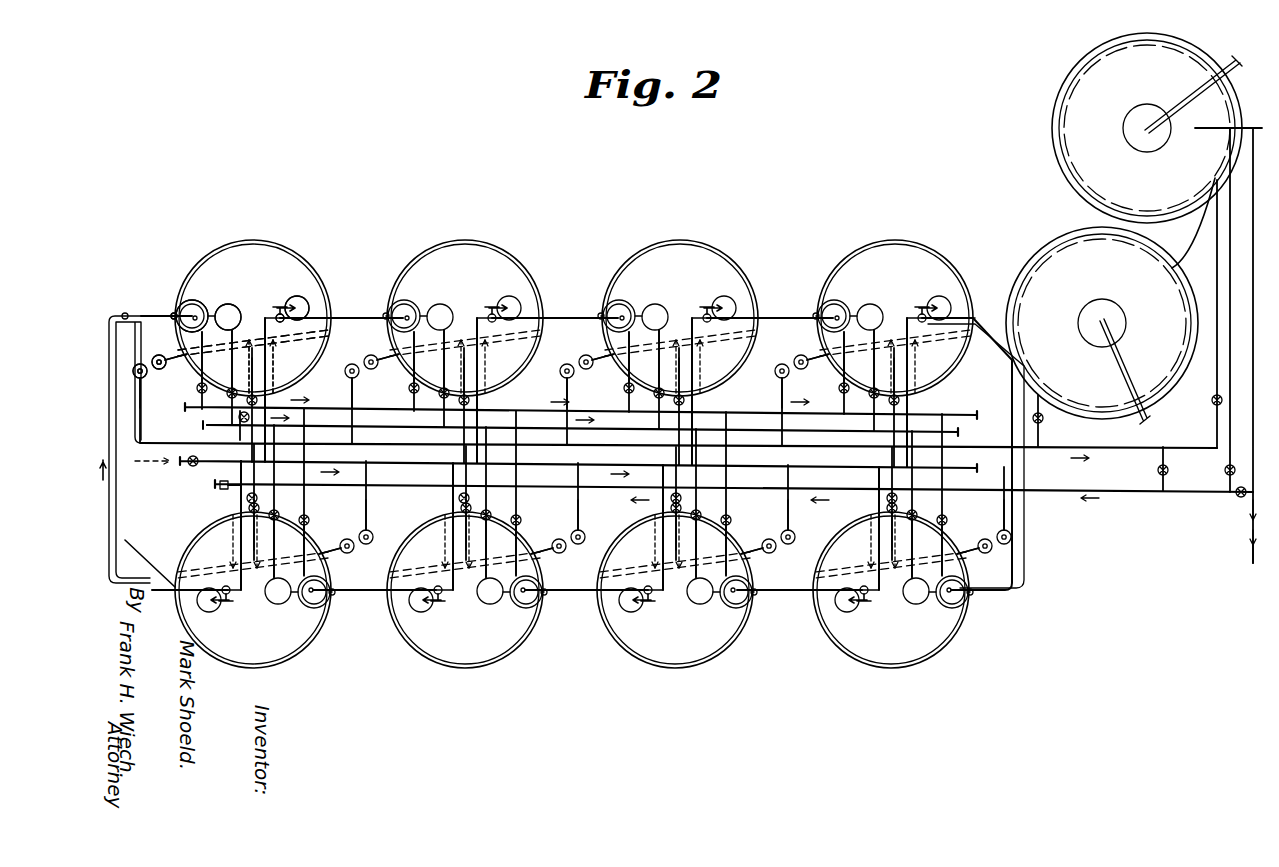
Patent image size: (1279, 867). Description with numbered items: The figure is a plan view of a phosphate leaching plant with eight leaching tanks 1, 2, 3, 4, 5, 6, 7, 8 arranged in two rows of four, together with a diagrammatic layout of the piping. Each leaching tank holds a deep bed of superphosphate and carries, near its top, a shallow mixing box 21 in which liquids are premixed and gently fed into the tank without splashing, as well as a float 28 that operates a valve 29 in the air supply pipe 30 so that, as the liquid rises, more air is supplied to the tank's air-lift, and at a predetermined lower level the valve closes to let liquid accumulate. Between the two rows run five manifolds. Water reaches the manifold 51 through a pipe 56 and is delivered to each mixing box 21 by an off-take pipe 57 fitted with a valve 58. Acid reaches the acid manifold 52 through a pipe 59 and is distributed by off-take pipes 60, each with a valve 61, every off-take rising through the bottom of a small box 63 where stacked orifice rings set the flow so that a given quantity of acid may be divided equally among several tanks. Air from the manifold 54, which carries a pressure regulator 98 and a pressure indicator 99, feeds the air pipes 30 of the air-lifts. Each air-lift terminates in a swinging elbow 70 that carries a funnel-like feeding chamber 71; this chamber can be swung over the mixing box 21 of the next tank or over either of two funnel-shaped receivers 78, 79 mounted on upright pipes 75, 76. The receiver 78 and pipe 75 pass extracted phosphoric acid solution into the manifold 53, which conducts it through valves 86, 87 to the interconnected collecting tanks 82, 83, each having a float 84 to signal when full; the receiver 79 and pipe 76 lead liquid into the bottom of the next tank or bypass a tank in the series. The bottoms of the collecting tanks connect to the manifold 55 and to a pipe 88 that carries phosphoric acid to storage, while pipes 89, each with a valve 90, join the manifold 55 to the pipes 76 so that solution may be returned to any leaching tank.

The leaching tank 1 is at (279, 243).
The leaching tank 2 is at (487, 249).
The leaching tank 3 is at (700, 244).
The leaching tank 4 is at (912, 242).
The leaching tank 5 is at (905, 664).
The leaching tank 6 is at (693, 662).
The leaching tank 7 is at (482, 664).
The leaching tank 8 is at (283, 662).
The mixing box 21 is at (962, 606).
The float 28 is at (850, 610).
The valve 29 is at (862, 584).
The air supply pipe 30 is at (672, 518).
The manifold 51 is at (322, 398).
The acid manifold 52 is at (208, 424).
The manifold 53 is at (138, 420).
The manifold 54 is at (380, 463).
The manifold 55 is at (1160, 494).
The pipe 56 is at (290, 408).
The off-take pipe 57 is at (730, 500).
The valve 58 is at (518, 512).
The pipe 59 is at (242, 421).
The off-take pipe 60 is at (655, 592).
The valve 61 is at (250, 520).
The small box 63 is at (910, 604).
The swinging elbow 70 is at (1010, 596).
The feeding chamber 71 is at (985, 596).
The upright pipe 75 is at (790, 520).
The upright pipe 76 is at (757, 512).
The funnel-shaped receiver 78 is at (1000, 534).
The funnel-shaped receiver 79 is at (987, 550).
The collecting tank 82 is at (1040, 248).
The collecting tank 83 is at (1058, 80).
The float 84 is at (1108, 302).
The valve 86 is at (1044, 418).
The valve 87 is at (1212, 400).
The pipe 88 is at (1250, 552).
The pipe 89 is at (660, 560).
The valve 90 is at (885, 500).
The pressure regulator 98 is at (185, 468).
The pressure indicator 99 is at (236, 466).